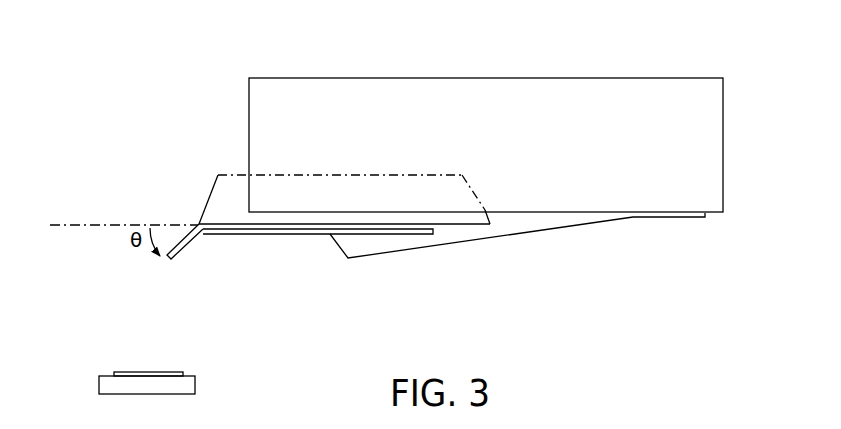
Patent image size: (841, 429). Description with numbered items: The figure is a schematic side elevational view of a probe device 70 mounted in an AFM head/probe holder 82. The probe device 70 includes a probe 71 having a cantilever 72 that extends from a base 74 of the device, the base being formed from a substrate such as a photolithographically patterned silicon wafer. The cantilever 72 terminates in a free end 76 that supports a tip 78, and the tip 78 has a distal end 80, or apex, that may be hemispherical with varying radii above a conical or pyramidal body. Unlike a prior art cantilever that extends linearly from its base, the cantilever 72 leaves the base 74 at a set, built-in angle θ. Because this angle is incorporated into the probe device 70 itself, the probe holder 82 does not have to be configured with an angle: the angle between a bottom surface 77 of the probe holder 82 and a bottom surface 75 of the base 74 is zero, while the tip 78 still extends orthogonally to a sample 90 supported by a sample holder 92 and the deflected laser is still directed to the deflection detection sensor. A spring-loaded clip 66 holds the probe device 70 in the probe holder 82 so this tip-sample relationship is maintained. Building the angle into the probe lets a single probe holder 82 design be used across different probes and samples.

The probe device 70 is at (130, 117).
The AFM head/probe holder 82 is at (353, 78).
The base 74 is at (218, 175).
The bottom surface of base 75 is at (295, 230).
The cantilever 72 is at (179, 250).
The probe 71 is at (211, 255).
The free end 76 is at (186, 271).
The tip 78 is at (168, 262).
The distal end 80 is at (170, 265).
The spring-loaded clip 66 is at (503, 236).
The bottom surface of probe holder 77 is at (582, 212).
The sample holder 92 is at (196, 383).
The sample 90 is at (122, 372).